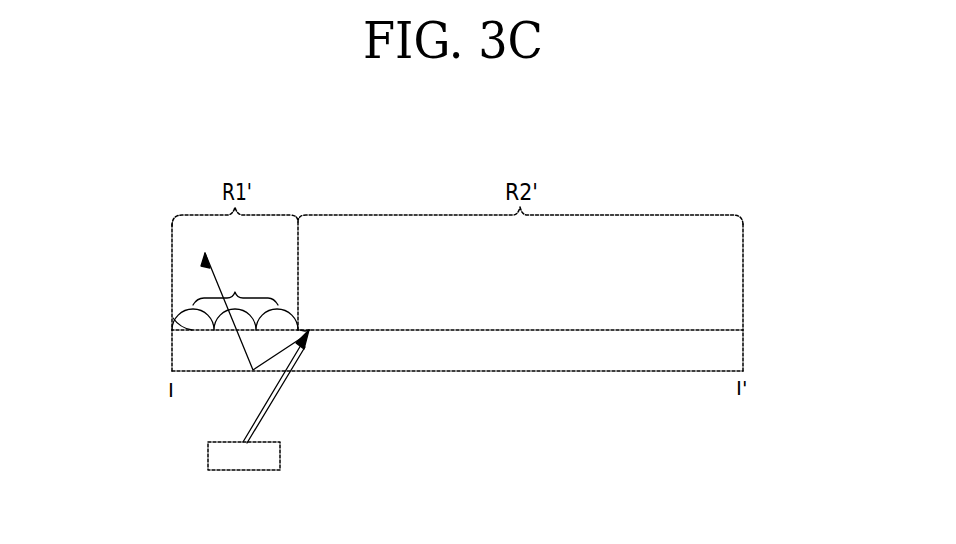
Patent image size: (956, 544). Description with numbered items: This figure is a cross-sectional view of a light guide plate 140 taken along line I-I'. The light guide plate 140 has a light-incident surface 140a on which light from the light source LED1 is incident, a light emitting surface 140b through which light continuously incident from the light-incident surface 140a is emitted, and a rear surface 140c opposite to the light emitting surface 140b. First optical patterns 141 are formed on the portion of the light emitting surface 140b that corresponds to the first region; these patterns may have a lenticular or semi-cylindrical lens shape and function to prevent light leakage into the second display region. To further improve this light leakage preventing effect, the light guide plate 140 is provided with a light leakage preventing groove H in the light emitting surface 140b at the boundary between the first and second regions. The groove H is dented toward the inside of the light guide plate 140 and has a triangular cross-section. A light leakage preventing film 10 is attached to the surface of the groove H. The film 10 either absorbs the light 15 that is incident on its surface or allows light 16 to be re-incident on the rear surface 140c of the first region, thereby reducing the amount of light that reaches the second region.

The light guide plate 140 is at (730, 352).
The light-incident surface 140a is at (172, 350).
The light emitting surface 140b is at (172, 315).
The rear surface 140c is at (458, 372).
The first optical patterns 141 is at (235, 286).
The light leakage preventing film 10 is at (319, 338).
The light leakage preventing groove H is at (305, 330).
The light 15 is at (273, 392).
The light 16 is at (272, 386).
The light source LED1 is at (280, 455).